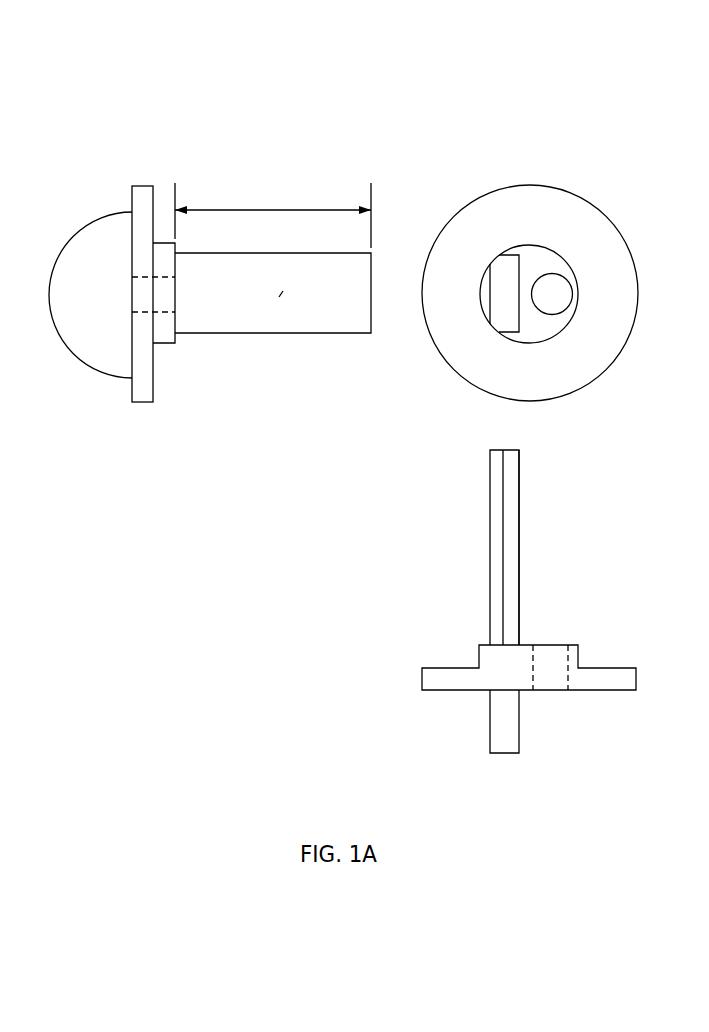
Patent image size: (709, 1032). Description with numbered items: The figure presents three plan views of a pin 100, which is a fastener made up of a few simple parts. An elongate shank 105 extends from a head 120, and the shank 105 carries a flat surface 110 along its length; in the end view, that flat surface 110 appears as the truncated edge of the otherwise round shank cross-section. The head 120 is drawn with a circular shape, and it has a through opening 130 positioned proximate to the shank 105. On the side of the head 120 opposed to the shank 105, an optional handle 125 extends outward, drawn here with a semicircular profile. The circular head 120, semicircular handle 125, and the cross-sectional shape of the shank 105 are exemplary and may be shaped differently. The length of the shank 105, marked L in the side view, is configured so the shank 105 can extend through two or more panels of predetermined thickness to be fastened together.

The pin 100 is at (143, 119).
The elongate shank 105 is at (223, 333).
The flat surface 110 is at (281, 291).
The head 120 is at (587, 385).
The handle 125 is at (88, 367).
The through opening 130 is at (552, 273).